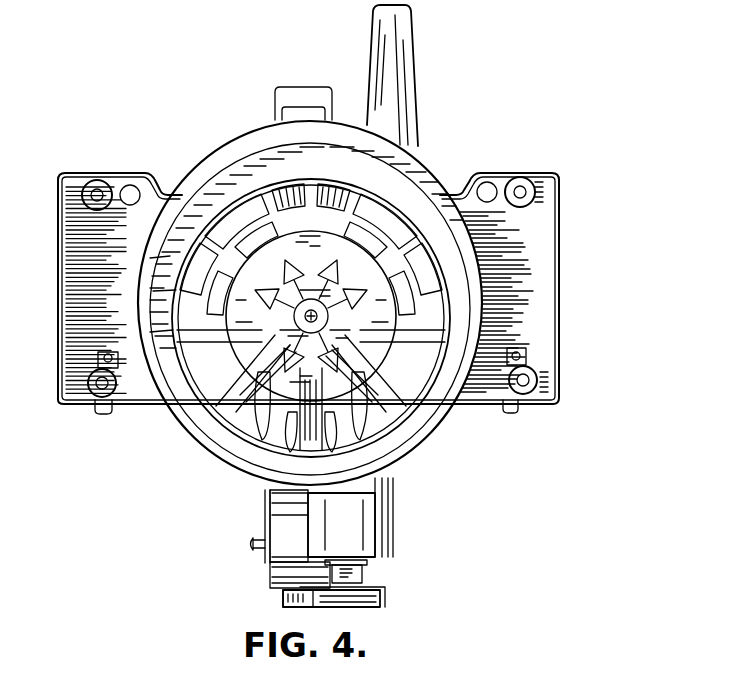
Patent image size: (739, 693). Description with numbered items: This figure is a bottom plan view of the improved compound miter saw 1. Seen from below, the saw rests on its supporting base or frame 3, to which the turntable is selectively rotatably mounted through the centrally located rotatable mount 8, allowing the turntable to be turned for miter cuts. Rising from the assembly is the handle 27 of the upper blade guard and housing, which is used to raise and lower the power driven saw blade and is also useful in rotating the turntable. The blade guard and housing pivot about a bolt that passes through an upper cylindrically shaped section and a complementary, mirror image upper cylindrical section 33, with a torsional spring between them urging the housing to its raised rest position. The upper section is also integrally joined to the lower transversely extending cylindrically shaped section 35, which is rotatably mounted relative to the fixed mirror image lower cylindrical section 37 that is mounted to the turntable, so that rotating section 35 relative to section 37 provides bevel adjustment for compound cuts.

The compound miter saw 1 is at (487, 135).
The supporting base or frame 3 is at (530, 272).
The rotatable mount 8 is at (318, 322).
The handle 27 is at (415, 62).
The upper cylindrical section 33 is at (278, 582).
The lower transversely extending cylindrically shaped section 35 is at (366, 532).
The lower cylindrical section 37 is at (393, 482).